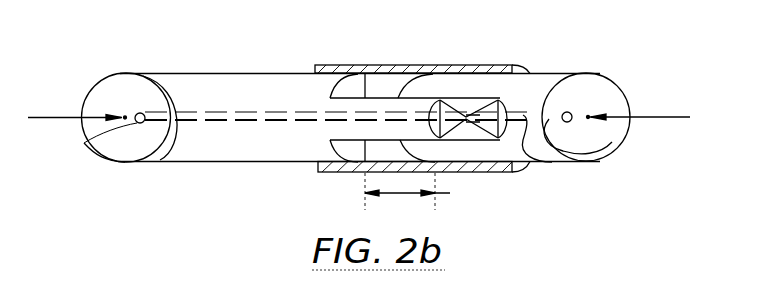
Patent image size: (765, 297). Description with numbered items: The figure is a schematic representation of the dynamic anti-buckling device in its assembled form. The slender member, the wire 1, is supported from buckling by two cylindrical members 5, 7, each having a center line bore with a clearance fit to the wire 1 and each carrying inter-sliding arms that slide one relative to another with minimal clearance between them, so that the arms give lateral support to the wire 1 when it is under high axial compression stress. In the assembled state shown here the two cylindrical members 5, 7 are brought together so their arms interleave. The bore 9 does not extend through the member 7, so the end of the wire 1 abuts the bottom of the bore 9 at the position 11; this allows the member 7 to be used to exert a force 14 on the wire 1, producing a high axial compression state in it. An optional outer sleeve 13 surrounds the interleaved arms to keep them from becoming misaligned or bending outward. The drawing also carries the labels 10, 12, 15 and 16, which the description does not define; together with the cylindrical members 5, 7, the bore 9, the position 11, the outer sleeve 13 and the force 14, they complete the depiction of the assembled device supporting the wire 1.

The wire 1 is at (552, 163).
The cylindrical member 5 is at (258, 63).
The cylindrical member 7 is at (535, 73).
The bore 9 is at (600, 157).
The inner tube 10 is at (457, 98).
The position 11 is at (578, 116).
The length 12 is at (425, 191).
The outer sleeve 13 is at (344, 55).
The force 14 is at (92, 140).
The core wire 15 is at (292, 121).
The proximal end cap 16 is at (84, 143).